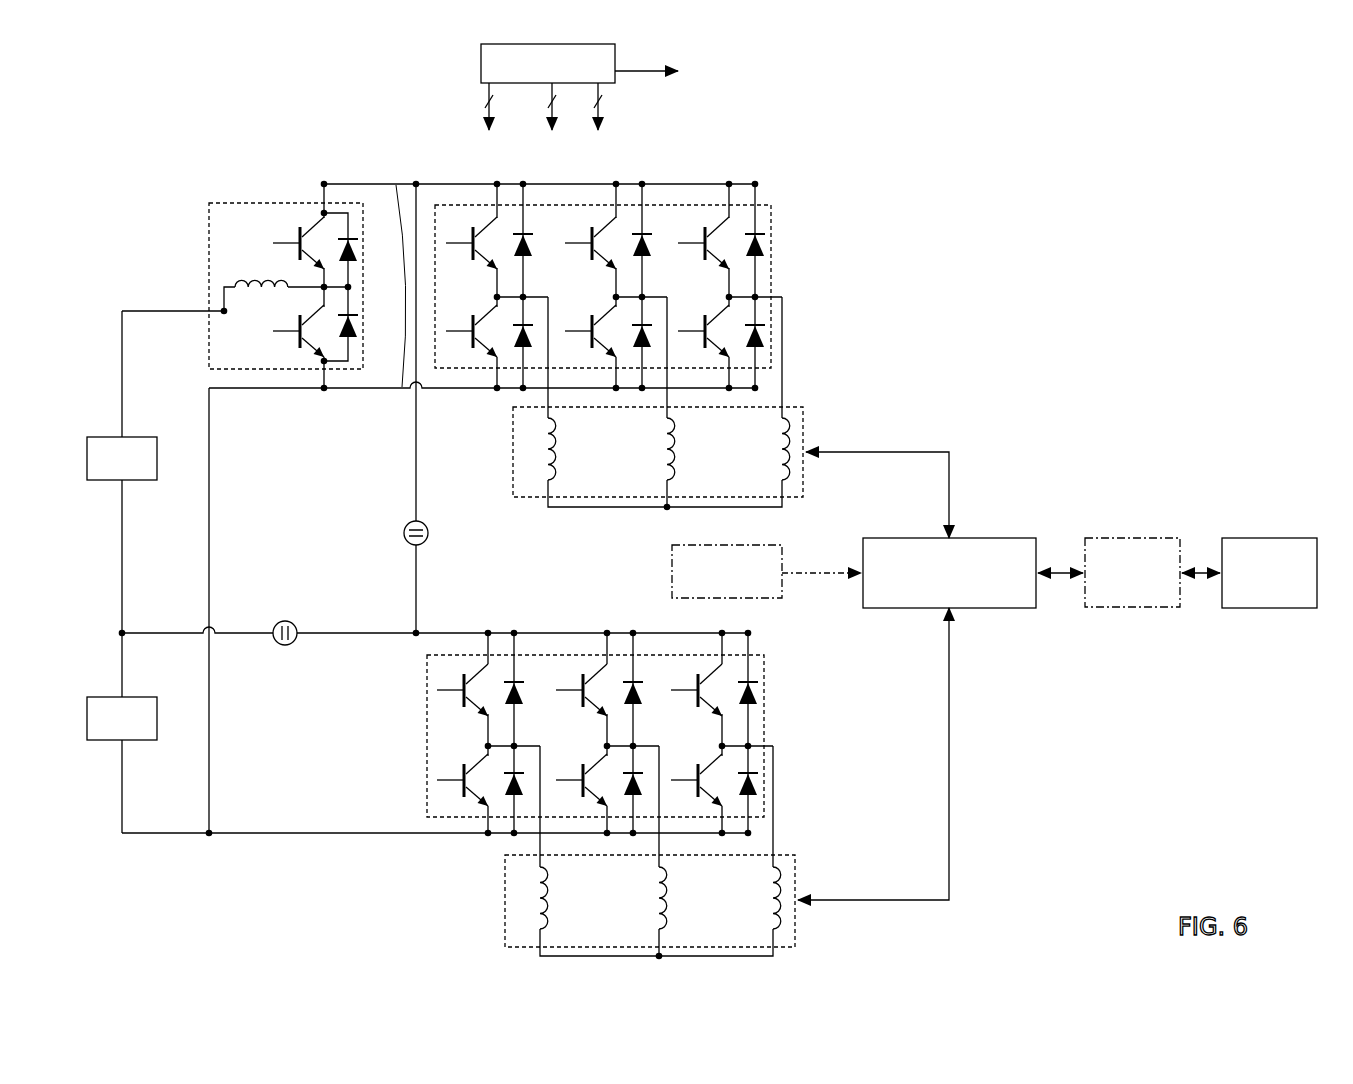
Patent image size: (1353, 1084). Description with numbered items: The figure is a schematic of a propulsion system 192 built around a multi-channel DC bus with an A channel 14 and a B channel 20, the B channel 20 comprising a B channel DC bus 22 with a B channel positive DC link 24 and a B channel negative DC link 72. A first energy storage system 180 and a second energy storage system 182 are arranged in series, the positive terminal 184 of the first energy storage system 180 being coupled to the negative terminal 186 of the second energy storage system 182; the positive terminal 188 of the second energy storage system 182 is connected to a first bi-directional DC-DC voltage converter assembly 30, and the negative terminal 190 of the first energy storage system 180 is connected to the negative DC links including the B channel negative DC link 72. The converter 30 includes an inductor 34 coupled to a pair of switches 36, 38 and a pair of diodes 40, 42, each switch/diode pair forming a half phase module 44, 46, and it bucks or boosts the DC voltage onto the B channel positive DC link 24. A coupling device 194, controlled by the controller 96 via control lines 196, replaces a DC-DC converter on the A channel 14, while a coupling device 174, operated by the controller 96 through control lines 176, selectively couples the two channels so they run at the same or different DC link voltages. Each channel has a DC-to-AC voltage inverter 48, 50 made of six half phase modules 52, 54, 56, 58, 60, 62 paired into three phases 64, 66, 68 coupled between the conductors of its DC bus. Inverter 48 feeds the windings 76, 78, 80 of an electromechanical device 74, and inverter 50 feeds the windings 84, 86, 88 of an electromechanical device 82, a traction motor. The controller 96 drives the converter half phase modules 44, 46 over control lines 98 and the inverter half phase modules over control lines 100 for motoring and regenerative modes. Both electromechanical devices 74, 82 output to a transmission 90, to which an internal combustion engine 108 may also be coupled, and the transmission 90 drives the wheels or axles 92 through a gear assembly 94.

The A channel 14 is at (284, 597).
The B channel 20 is at (278, 155).
The B channel DC bus 22 is at (404, 408).
The B channel positive DC link 24 is at (350, 184).
The first bi-directional DC-DC voltage converter assembly 30 is at (256, 203).
The inductor 34 is at (244, 280).
The switch 36 is at (292, 243).
The switch 38 is at (294, 331).
The diode 40 is at (354, 250).
The diode 42 is at (356, 324).
The half phase module 44 is at (274, 228).
The half phase module 46 is at (274, 320).
The DC-to-AC voltage inverter 48 is at (764, 665).
The DC-to-AC voltage inverter 50 is at (771, 222).
The half phase module 52 is at (478, 222).
The half phase module 54 is at (588, 221).
The half phase module 56 is at (696, 219).
The half phase module 58 is at (478, 312).
The half phase module 60 is at (589, 309).
The half phase module 62 is at (696, 308).
The phase 64 is at (516, 180).
The phase 66 is at (633, 180).
The phase 68 is at (737, 180).
The B channel negative DC link 72 is at (385, 389).
The electromechanical device 74 is at (505, 910).
The winding 76 is at (548, 905).
The winding 78 is at (666, 904).
The winding 80 is at (769, 885).
The electromechanical device 82 is at (513, 461).
The winding 84 is at (556, 456).
The winding 86 is at (674, 456).
The winding 88 is at (777, 436).
The transmission 90 is at (997, 608).
The driving wheels or axles 92 is at (1259, 608).
The gear assembly 94 is at (1125, 608).
The controller 96 is at (481, 74).
The control lines 98 is at (548, 96).
The control lines 100 is at (602, 96).
The internal combustion engine 108 is at (672, 574).
The coupling device 174 is at (425, 541).
The control lines 176 is at (485, 96).
The first energy storage system 180 is at (157, 721).
The second energy storage system 182 is at (157, 462).
The positive terminal 184 is at (118, 696).
The negative terminal 186 is at (124, 482).
The positive terminal 188 is at (118, 436).
The negative terminal 190 is at (124, 742).
The propulsion system 192 is at (166, 134).
The coupling device 194 is at (294, 644).
The control lines 196 is at (620, 71).